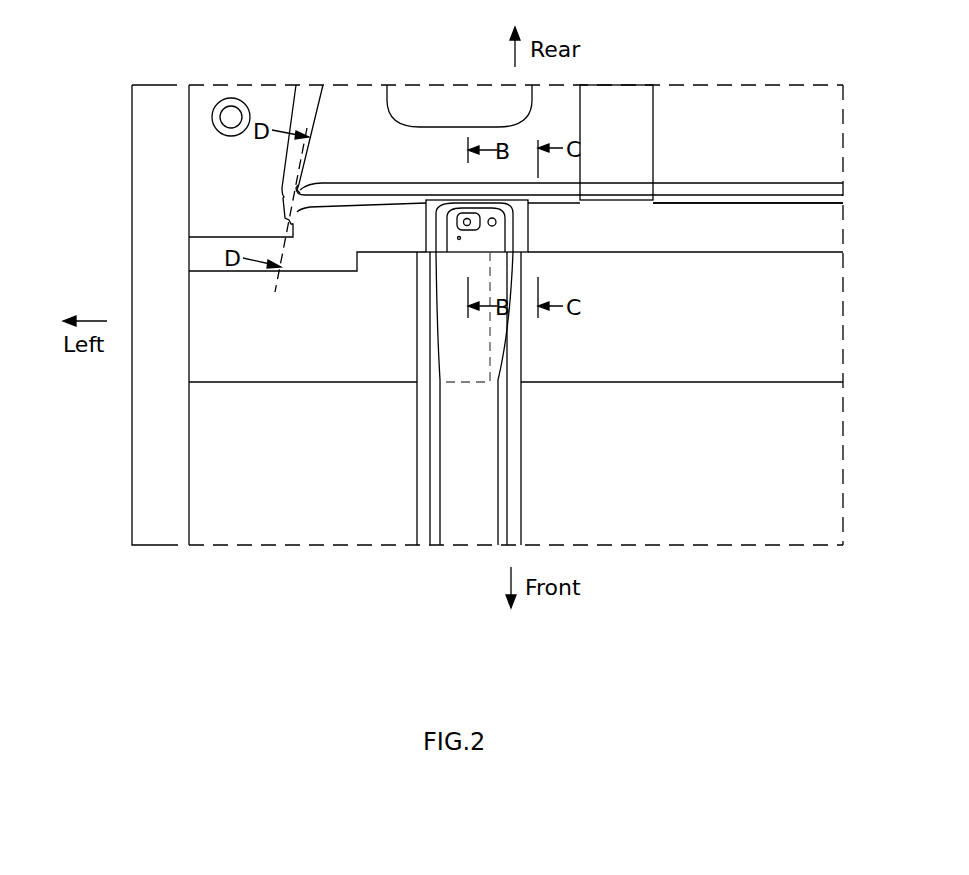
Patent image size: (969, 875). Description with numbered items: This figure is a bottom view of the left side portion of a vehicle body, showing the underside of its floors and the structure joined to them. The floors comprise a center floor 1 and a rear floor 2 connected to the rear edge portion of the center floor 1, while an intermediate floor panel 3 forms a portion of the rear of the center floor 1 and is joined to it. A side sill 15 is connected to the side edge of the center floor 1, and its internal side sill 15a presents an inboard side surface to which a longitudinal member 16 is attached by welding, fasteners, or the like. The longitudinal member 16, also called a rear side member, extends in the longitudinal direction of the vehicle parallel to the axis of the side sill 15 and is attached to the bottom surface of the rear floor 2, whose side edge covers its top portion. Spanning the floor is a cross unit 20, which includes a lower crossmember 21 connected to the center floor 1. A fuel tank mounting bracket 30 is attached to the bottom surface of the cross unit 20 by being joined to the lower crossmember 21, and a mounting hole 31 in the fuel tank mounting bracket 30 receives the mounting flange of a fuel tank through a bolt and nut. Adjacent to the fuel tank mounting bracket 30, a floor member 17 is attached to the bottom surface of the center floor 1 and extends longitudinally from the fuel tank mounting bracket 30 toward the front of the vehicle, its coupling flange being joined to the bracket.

The center floor 1 is at (213, 467).
The rear floor 2 is at (358, 98).
The intermediate floor panel 3 is at (222, 300).
The side sill 15 is at (127, 520).
The internal side sill 15a is at (167, 407).
The longitudinal member 16 is at (272, 98).
The floor member 17 is at (450, 420).
The cross unit 20 is at (678, 254).
The lower crossmember 21 is at (750, 243).
The fuel tank mounting bracket 30 is at (427, 224).
The mounting hole 31 is at (465, 223).